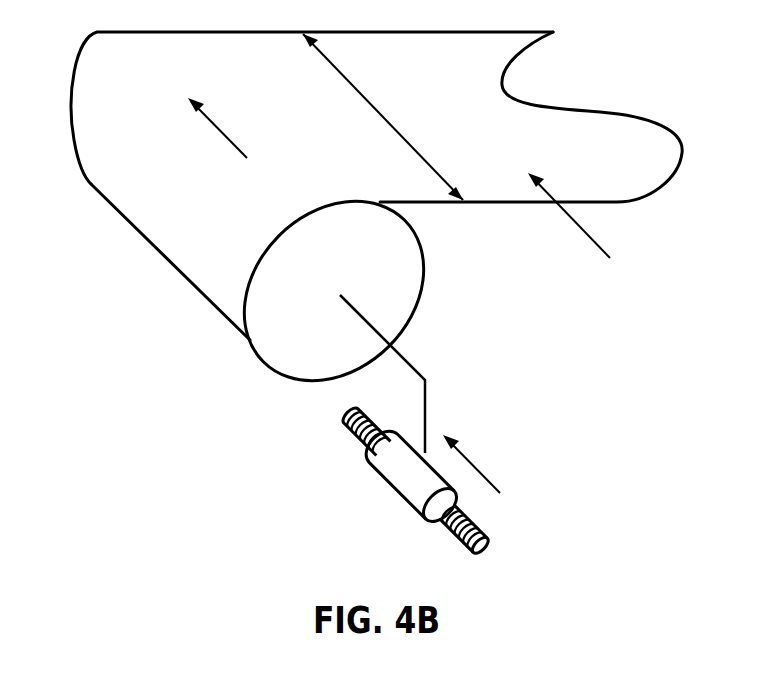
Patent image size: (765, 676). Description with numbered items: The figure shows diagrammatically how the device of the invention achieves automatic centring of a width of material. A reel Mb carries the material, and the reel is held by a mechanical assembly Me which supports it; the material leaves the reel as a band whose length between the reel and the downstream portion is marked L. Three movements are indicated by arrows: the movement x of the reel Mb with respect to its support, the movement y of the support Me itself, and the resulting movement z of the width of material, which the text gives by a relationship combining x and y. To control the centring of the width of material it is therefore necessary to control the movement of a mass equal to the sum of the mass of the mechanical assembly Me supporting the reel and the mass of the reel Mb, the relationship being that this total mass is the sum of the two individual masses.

The reel Mb is at (140, 205).
The mechanical assembly supporting the reel Me is at (415, 429).
The length dimension L is at (383, 117).
The movement of the reel with respect to the support x is at (217, 126).
The movement of the support y is at (471, 459).
The movement of the width of material z is at (574, 215).